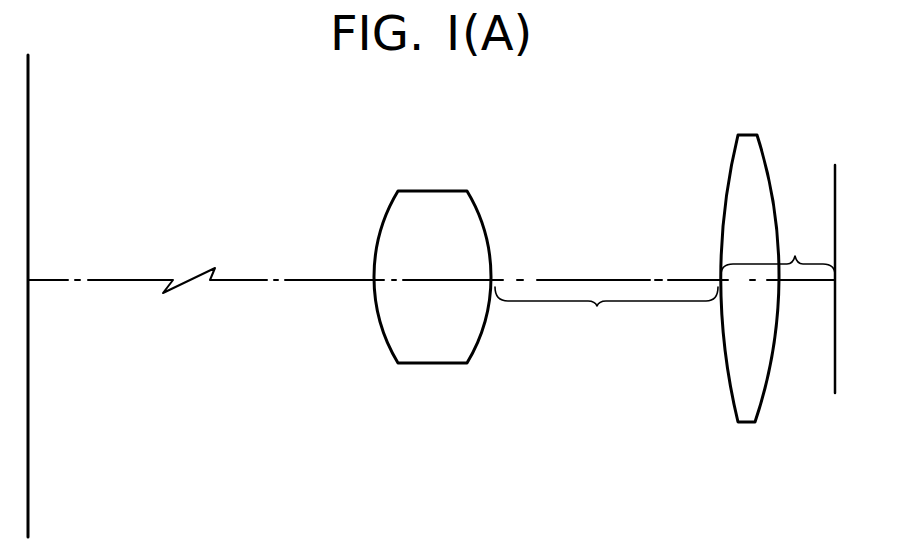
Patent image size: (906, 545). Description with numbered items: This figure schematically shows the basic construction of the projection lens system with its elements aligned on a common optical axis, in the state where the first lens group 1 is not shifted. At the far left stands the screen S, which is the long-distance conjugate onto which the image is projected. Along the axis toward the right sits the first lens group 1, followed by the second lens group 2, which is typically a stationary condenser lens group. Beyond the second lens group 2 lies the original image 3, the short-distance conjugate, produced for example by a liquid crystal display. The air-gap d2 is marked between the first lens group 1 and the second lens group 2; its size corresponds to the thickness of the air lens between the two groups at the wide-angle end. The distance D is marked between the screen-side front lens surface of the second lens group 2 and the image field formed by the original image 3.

The screen S is at (28, 442).
The first lens group 1 is at (432, 366).
The second lens group 2 is at (744, 424).
The original image 3 is at (835, 383).
The air-gap d2 is at (606, 314).
The distance between front lens surface of second group and image field D is at (778, 248).